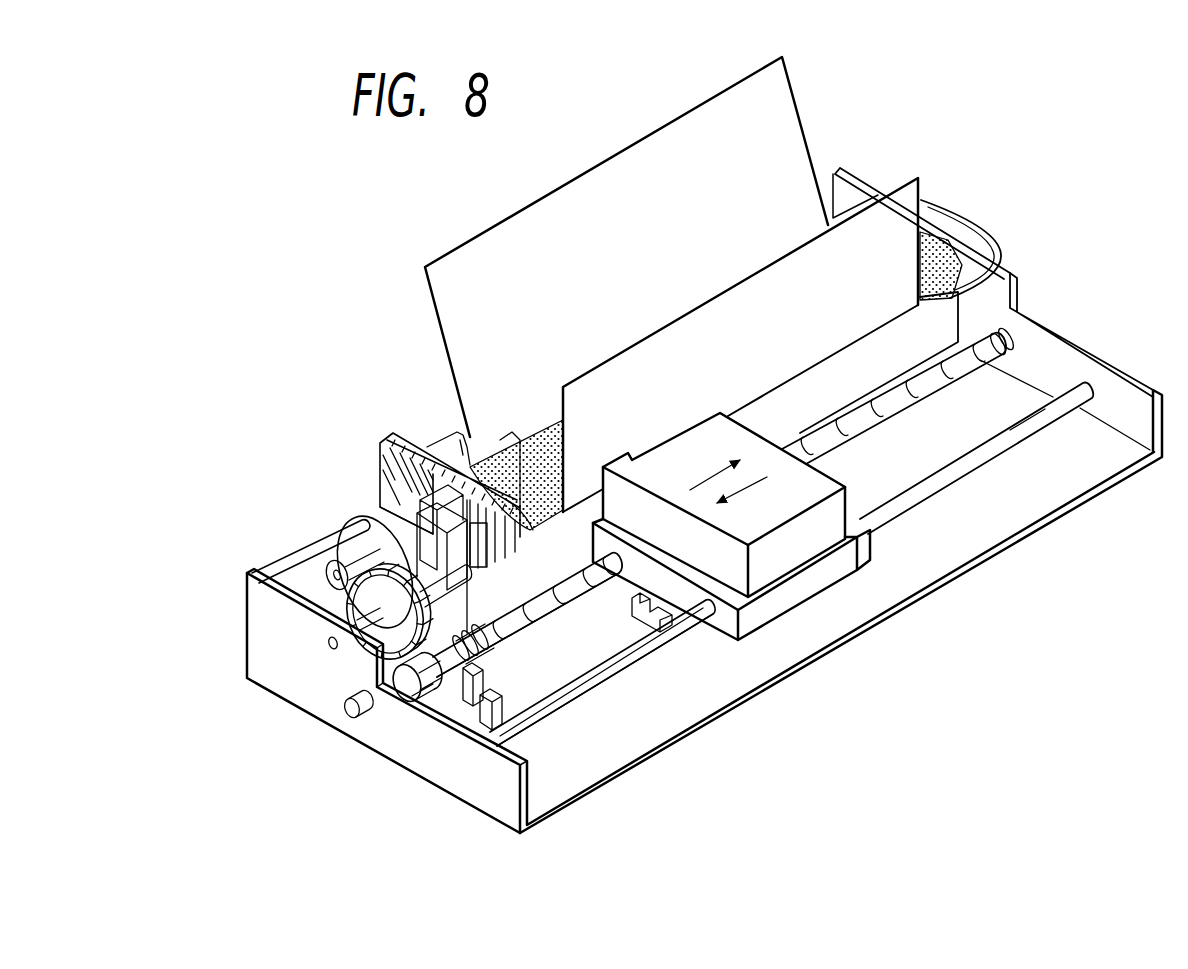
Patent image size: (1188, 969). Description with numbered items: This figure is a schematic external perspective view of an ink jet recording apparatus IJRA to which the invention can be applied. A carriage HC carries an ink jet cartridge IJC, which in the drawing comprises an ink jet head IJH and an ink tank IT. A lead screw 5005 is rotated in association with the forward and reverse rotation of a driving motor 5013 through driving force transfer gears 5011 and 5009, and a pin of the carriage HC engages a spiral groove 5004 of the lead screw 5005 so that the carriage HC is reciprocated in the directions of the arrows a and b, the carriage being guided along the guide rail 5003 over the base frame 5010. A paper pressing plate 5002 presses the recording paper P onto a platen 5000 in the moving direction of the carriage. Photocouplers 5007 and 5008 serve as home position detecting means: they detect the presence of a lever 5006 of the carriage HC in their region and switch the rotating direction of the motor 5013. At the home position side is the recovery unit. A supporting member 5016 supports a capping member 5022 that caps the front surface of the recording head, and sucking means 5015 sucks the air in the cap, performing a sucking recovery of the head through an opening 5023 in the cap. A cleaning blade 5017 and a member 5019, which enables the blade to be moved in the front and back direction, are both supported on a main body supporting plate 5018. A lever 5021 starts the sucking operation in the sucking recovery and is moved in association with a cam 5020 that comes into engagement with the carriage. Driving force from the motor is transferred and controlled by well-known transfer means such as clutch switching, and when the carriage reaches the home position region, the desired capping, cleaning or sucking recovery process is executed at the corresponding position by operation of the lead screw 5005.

The recording paper P is at (786, 98).
The ink jet recording apparatus IJRA is at (928, 129).
The platen 5000 is at (947, 268).
The paper pressing plate 5002 is at (856, 386).
The ink jet cartridge IJC is at (848, 480).
The ink jet head IJH is at (623, 460).
The ink tank IT is at (757, 440).
The carriage HC is at (862, 551).
The guide rail 5003 is at (520, 712).
The spiral groove 5004 is at (622, 573).
The lead screw 5005 is at (525, 688).
The lever 5006 is at (687, 588).
The photocoupler 5007 is at (425, 695).
The photocoupler 5008 is at (472, 688).
The driving force transfer gear 5009 is at (385, 672).
The base frame 5010 is at (246, 677).
The driving force transfer gear 5011 is at (352, 601).
The driving motor 5013 is at (383, 510).
The sucking means 5015 is at (437, 447).
The supporting member 5016 is at (467, 440).
The cleaning blade 5017 is at (503, 455).
The main body supporting plate 5018 is at (398, 438).
The blade moving member 5019 is at (380, 505).
The cam 5020 is at (525, 578).
The lever 5021 is at (545, 560).
The capping member 5022 is at (470, 587).
The opening 5023 is at (636, 602).